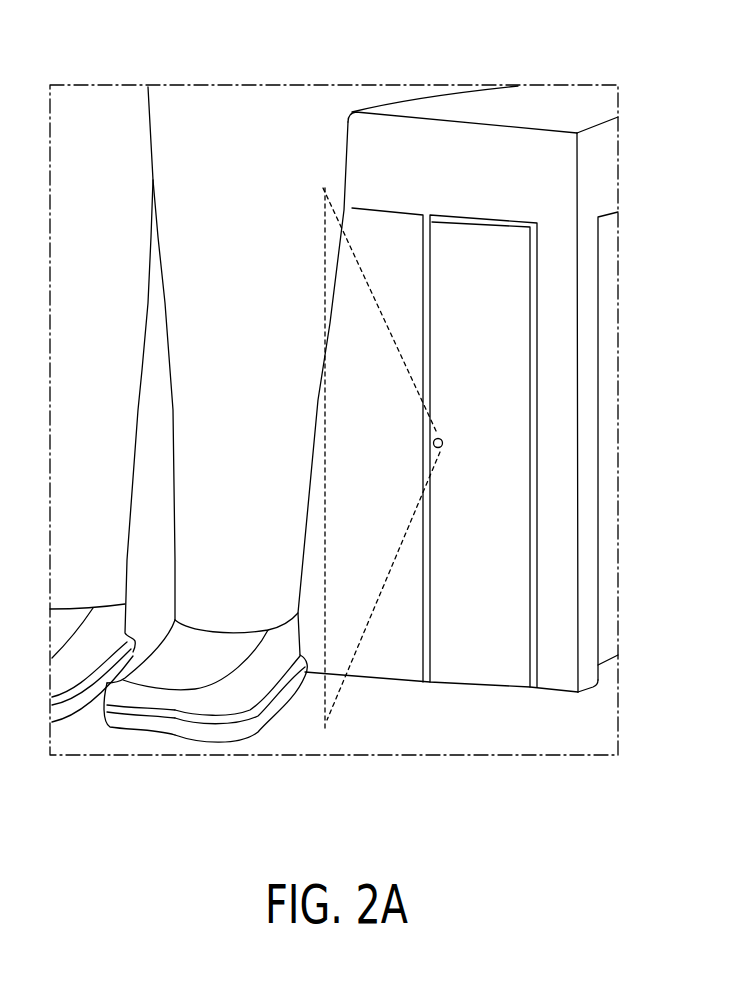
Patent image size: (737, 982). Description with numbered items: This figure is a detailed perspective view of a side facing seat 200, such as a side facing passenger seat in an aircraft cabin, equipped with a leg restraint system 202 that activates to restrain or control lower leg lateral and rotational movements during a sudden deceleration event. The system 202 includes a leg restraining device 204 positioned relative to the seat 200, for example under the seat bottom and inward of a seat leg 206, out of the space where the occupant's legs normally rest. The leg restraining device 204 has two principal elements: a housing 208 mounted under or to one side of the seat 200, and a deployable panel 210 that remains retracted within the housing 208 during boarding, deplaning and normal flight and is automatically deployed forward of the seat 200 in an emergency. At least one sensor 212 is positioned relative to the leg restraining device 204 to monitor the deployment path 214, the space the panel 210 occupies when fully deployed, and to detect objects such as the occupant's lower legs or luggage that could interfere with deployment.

The side facing seat 200 is at (568, 97).
The leg restraint system 202 is at (566, 713).
The leg restraining device 204 is at (618, 357).
The seat leg 206 is at (558, 318).
The housing 208 is at (612, 250).
The panel 210 is at (475, 673).
The sensor 212 is at (443, 448).
The deployment path 214 is at (326, 742).